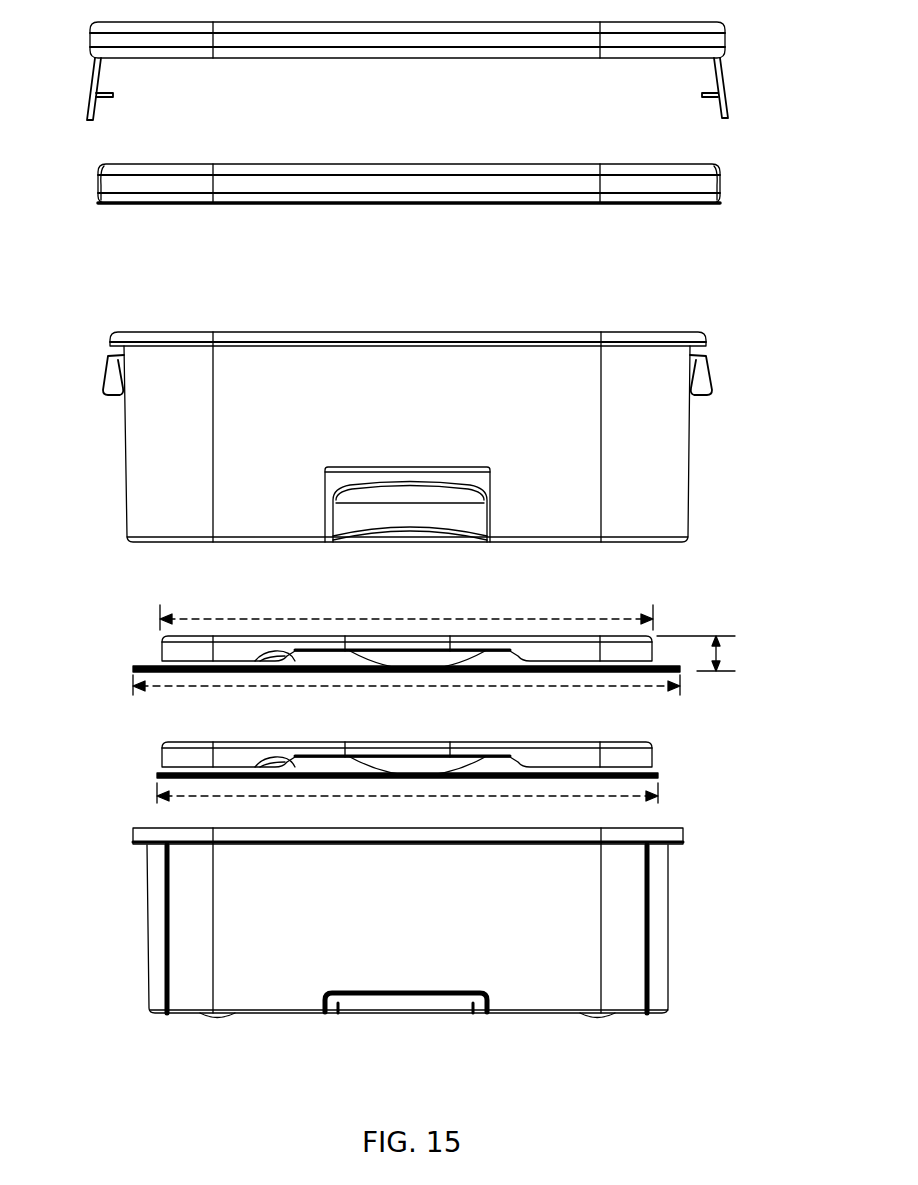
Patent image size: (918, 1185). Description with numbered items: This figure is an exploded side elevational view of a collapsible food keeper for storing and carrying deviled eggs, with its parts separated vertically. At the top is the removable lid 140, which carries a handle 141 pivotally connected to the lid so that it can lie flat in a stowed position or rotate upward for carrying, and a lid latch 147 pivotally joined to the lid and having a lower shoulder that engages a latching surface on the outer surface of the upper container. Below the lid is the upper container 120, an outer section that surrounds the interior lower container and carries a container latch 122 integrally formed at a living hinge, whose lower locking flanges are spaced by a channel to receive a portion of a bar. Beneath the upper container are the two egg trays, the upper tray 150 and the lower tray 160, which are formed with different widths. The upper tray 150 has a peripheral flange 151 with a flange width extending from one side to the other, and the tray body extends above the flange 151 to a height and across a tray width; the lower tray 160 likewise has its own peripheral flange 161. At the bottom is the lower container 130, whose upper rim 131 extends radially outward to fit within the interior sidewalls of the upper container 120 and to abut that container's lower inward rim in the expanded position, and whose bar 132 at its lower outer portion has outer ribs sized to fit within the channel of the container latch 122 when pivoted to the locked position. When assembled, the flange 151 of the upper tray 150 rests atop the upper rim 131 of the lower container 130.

The upper container 120 is at (683, 452).
The container latch 122 is at (406, 522).
The lower container 130 is at (431, 901).
The upper rim 131 is at (683, 830).
The bar 132 is at (413, 997).
The lid 140 is at (718, 200).
The handle 141 is at (730, 40).
The lid latch 147 is at (726, 112).
The upper tray 150 is at (398, 636).
The peripheral flange 151 is at (135, 668).
The lower tray 160 is at (400, 764).
The peripheral flange 161 is at (158, 774).